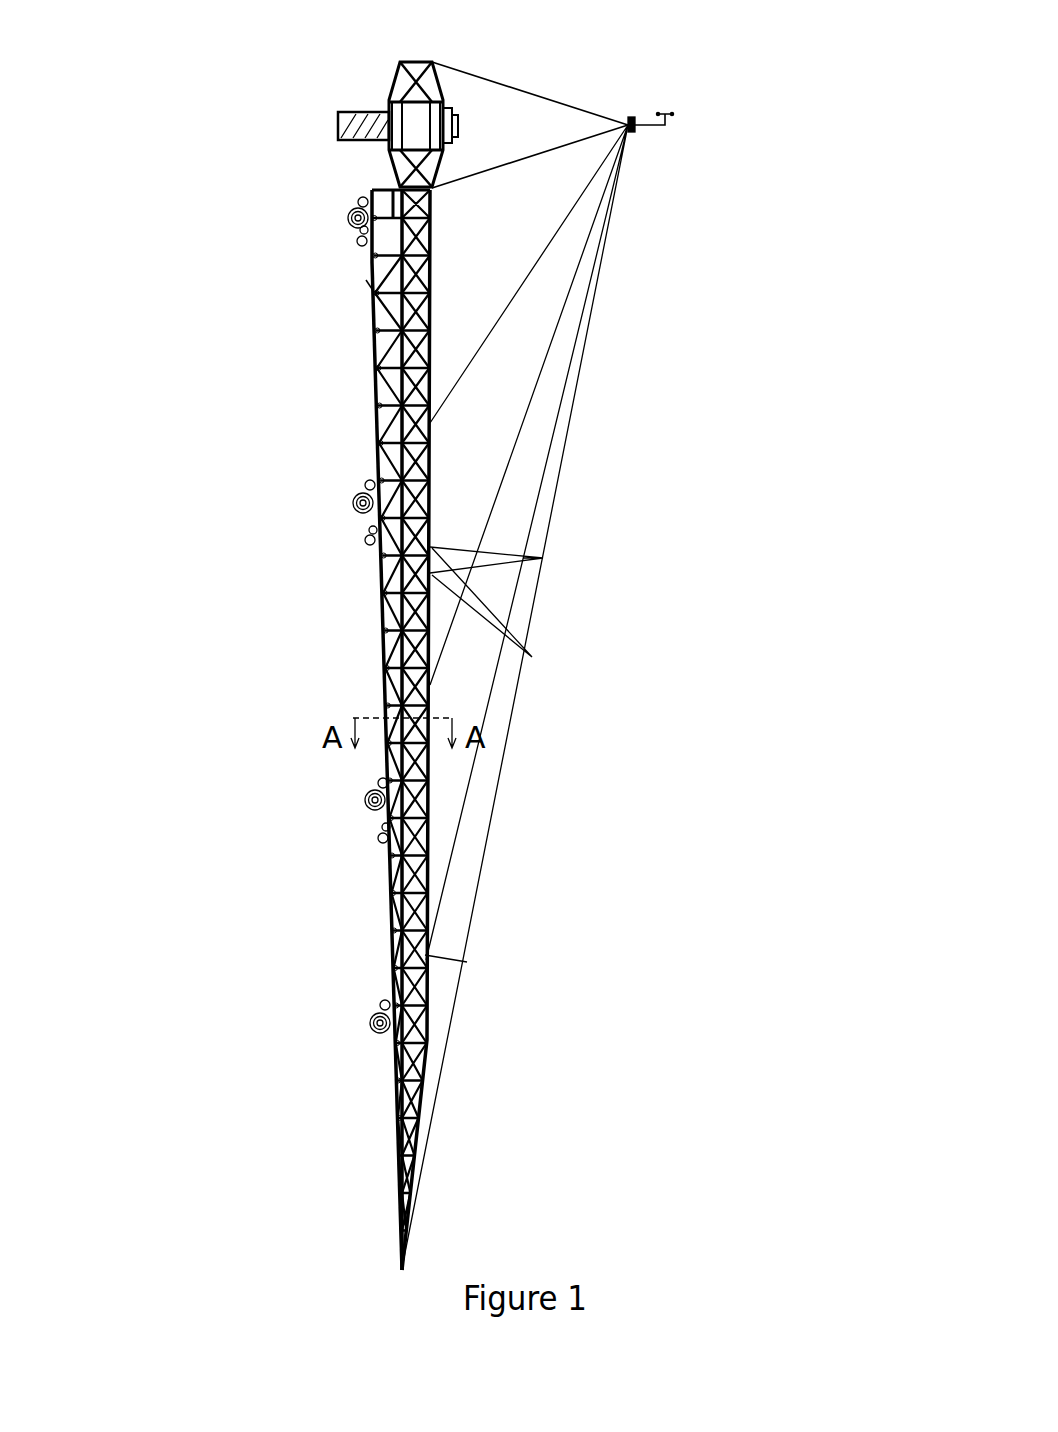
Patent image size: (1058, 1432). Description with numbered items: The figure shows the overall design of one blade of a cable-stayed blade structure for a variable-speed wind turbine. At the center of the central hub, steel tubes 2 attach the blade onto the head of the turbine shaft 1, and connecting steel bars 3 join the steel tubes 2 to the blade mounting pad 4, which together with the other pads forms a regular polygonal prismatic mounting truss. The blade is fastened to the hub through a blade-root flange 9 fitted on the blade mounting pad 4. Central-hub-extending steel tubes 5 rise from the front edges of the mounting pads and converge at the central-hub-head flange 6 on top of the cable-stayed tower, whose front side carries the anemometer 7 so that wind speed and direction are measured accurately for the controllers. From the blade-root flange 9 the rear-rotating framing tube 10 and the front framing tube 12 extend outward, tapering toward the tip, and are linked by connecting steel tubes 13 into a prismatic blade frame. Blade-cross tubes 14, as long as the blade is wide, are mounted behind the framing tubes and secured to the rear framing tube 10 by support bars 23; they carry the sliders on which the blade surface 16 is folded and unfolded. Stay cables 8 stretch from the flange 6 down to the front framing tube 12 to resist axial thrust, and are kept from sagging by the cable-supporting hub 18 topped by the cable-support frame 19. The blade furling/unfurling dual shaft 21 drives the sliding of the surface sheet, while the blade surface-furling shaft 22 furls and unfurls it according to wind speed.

The turbine shaft 1 is at (340, 115).
The steel tube 2 is at (386, 110).
The connecting steel bars 3 is at (395, 88).
The blade mounting pad 4 is at (417, 62).
The central-hub-extending steel tubes 5 is at (500, 83).
The central-hub-head flange 6 is at (631, 118).
The anemometer 7 is at (650, 128).
The stay cables 8 is at (575, 390).
The blade-root flange 9 is at (433, 203).
The rear-rotating framing tube 10 is at (400, 452).
The front framing tube 12 is at (396, 552).
The connecting steel tubes 13 is at (396, 620).
The blade-cross tubes 14 is at (380, 443).
The blade surface 16 is at (377, 372).
The cable-supporting hub 18 is at (532, 657).
The cable-support frame 19 is at (523, 558).
The blade furling/unfurling dual shaft 21 is at (357, 240).
The blade surface-furling shaft 22 is at (348, 212).
The support bars 23 is at (373, 255).